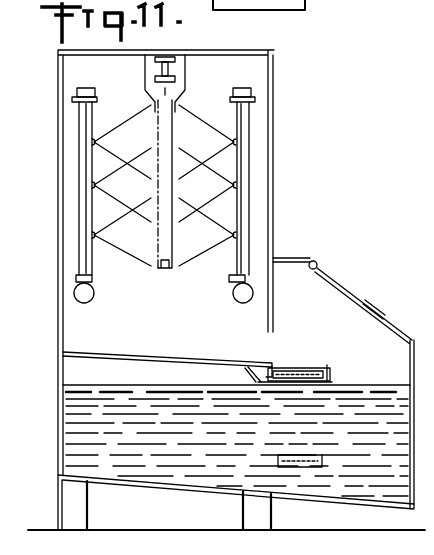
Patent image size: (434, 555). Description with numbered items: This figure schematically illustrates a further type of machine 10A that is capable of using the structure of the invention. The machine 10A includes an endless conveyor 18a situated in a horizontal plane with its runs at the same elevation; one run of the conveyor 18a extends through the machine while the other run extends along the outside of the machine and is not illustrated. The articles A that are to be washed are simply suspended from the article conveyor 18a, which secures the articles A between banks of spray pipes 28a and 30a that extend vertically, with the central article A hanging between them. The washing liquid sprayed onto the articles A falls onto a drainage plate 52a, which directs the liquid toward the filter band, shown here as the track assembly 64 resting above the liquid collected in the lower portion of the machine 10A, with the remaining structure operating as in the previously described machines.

The machine 10A is at (283, 103).
The conveyor 18a is at (138, 94).
The articles A is at (164, 272).
The spray pipe 30a is at (79, 133).
The spray pipe 28a is at (250, 140).
The drainage plate 52a is at (146, 338).
The track assembly 64 is at (317, 364).